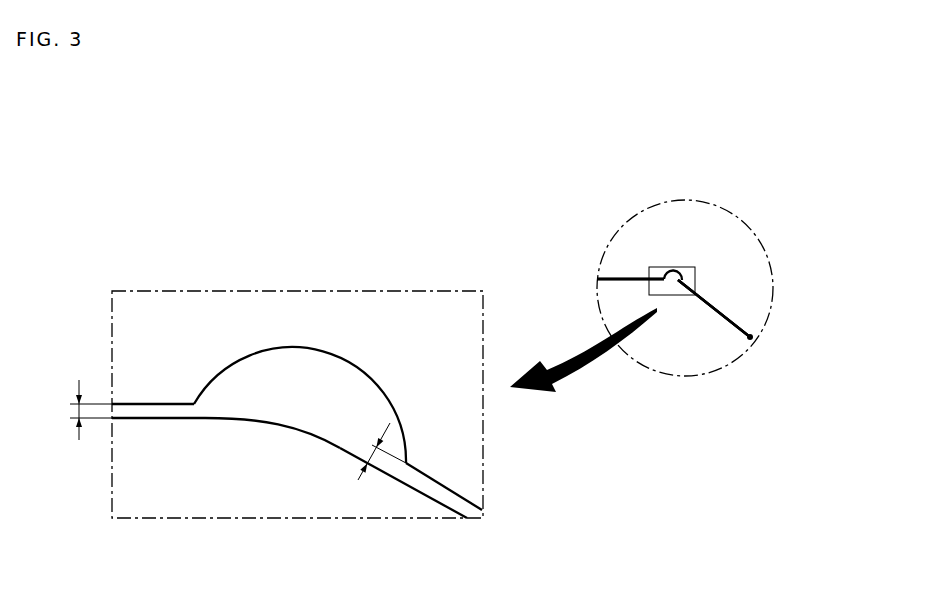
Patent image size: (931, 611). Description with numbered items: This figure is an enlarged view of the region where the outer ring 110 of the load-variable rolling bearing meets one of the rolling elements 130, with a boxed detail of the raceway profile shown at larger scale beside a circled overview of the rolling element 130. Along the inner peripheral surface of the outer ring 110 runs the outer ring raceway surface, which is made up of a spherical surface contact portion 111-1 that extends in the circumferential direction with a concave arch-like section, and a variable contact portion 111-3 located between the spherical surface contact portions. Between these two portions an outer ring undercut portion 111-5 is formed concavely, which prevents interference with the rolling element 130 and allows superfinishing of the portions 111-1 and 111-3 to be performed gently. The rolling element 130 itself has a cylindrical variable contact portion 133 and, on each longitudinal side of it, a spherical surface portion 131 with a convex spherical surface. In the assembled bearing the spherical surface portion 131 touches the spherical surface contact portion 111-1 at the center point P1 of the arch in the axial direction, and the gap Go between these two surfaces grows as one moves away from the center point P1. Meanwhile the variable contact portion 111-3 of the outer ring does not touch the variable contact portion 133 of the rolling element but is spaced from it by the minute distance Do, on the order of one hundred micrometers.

The outer ring 110 is at (727, 240).
The spherical surface contact portion 111-1 is at (437, 479).
The variable contact portion 111-3 is at (156, 403).
The outer ring undercut portion 111-5 is at (297, 347).
The rolling element 130 is at (672, 353).
The spherical surface portion 131 is at (418, 491).
The variable contact portion 133 is at (138, 418).
The center point P1 is at (755, 340).
The minute distance Do is at (78, 410).
The gap Go is at (367, 447).